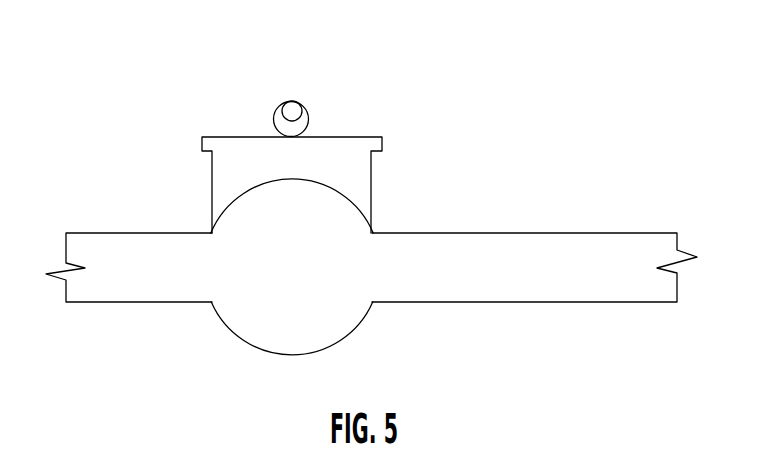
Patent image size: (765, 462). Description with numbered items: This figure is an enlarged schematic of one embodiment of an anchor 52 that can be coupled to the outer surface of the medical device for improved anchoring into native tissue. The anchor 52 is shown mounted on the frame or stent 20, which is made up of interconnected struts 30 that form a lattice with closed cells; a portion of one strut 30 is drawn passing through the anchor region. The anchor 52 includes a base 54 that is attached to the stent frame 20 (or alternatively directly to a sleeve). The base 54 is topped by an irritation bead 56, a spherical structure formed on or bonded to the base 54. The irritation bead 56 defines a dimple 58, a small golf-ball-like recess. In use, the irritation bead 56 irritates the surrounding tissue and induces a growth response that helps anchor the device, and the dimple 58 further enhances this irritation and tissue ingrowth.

The stent frame 20 is at (332, 238).
The strut 30 is at (542, 246).
The anchor 52 is at (382, 105).
The base 54 is at (352, 178).
The irritation bead 56 is at (308, 110).
The dimple 58 is at (290, 102).